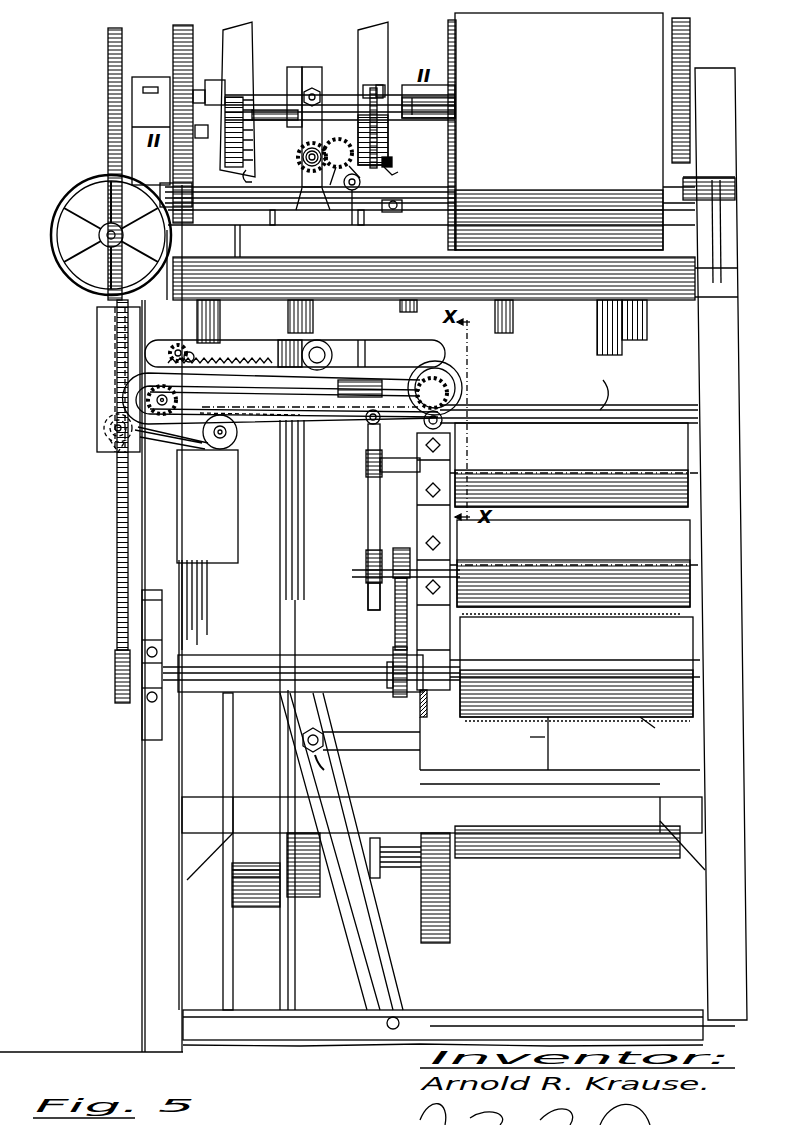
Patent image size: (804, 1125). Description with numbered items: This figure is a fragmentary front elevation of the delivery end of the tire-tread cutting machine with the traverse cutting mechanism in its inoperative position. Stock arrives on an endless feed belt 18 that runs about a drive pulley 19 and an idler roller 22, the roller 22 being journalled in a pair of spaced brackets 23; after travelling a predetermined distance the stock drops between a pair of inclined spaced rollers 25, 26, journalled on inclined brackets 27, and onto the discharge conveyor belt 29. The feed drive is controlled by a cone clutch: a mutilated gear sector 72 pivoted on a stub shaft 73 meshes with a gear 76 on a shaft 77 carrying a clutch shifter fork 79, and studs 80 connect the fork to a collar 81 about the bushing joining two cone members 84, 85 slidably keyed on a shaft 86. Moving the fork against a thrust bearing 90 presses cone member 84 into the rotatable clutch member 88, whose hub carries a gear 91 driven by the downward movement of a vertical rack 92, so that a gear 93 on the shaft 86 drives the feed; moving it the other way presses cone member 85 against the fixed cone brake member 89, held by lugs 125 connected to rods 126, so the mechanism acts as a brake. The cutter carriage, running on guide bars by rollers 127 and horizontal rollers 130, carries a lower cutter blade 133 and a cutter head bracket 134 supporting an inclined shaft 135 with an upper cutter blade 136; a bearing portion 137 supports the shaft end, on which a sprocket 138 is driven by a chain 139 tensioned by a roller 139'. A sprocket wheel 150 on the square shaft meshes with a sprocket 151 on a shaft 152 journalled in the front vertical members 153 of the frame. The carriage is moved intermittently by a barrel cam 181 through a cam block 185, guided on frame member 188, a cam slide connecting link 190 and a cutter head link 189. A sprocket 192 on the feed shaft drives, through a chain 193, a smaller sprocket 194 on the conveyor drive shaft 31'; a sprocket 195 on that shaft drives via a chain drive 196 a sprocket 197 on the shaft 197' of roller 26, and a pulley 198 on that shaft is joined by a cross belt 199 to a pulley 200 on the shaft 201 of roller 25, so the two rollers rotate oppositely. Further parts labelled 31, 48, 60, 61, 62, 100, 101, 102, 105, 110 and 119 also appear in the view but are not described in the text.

The endless feed belt 18 is at (565, 80).
The drive pulley 19 is at (448, 33).
The roller 22 is at (453, 230).
The spaced brackets 23 is at (173, 265).
The inclined spaced roller 25 is at (663, 445).
The inclined spaced roller 26 is at (673, 543).
The spaced inclined brackets 27 is at (427, 518).
The discharge conveyor belt 29 is at (683, 612).
The roller end 31 is at (660, 736).
The conveyor drive shaft 31' is at (300, 663).
The hand wheel 48 is at (92, 287).
The gear 60 is at (438, 943).
The hub 61 is at (396, 868).
The frame column 62 is at (233, 960).
The mutilated gear sector 72 is at (352, 173).
The stub shaft 73 is at (353, 210).
The gear 76 is at (298, 147).
The shaft 77 is at (300, 155).
The clutch shifter fork 79 is at (318, 117).
The studs 80 is at (317, 82).
The collar 81 is at (312, 67).
The cone member 84 is at (253, 37).
The cone member 85 is at (357, 33).
The shaft 86 is at (428, 97).
The clutch member 88 is at (262, 173).
The fixed cone brake member 89 is at (392, 170).
The thrust bearing 90 is at (294, 67).
The gear 91 is at (197, 145).
The vertical rack 92 is at (174, 45).
The gear 93 is at (692, 47).
The pinion 100 is at (192, 352).
The gear 101 is at (180, 345).
The housing 102 is at (97, 335).
The rack 105 is at (222, 358).
The chain 110 is at (140, 390).
The hook 119 is at (586, 393).
The lugs 125 is at (383, 92).
The rods 126 is at (392, 160).
The upper and lower rollers 127 is at (302, 343).
The upper and lower horizontal rollers 130 is at (295, 343).
The lower cutter blade 133 is at (370, 440).
The cutter head bracket 134 is at (317, 355).
The inclined shaft 135 is at (467, 400).
The upper cutter blade 136 is at (450, 370).
The bearing portion 137 is at (488, 410).
The sprocket 138 is at (460, 385).
The chain 139 is at (250, 432).
The roller 139' is at (186, 458).
The sprocket wheel 150 is at (97, 400).
The sprocket 151 is at (97, 432).
The shaft 152 is at (97, 453).
The front vertical members 153 is at (145, 850).
The barrel cam 181 is at (613, 858).
The cam block 185 is at (530, 737).
The frame member 188 is at (580, 800).
The cutter head link 189 is at (370, 967).
The cam slide connecting link 190 is at (388, 750).
The sprocket 192 is at (108, 70).
The chain 193 is at (117, 528).
The sprocket 194 is at (115, 668).
The sprocket 195 is at (385, 658).
The chain drive 196 is at (395, 632).
The sprocket 197 is at (371, 590).
The shaft 197' is at (386, 573).
The pulley 198 is at (372, 598).
The cross belt 199 is at (368, 517).
The pulley 200 is at (368, 492).
The shaft 201 is at (380, 463).